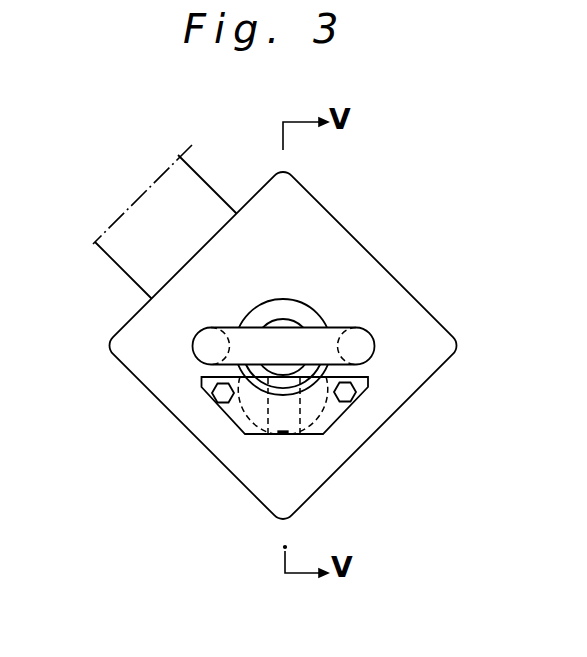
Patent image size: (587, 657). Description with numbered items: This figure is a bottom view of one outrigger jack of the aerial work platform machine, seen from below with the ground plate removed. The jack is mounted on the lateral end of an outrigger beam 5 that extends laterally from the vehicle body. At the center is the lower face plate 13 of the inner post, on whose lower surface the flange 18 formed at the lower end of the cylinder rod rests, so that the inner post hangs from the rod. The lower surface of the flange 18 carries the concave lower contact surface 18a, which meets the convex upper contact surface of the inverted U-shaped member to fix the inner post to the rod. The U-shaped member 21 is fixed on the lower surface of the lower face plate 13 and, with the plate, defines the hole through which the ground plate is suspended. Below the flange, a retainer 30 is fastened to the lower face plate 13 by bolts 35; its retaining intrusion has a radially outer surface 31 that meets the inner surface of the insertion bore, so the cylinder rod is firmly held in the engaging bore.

The outrigger beam 5 is at (213, 190).
The lower face plate 13 is at (345, 239).
The flange 18 is at (298, 308).
The lower contact surface 18a is at (280, 318).
The U-shaped member 21 is at (328, 327).
The retainer 30 is at (337, 418).
The radially outer surface 31 is at (279, 437).
The bolts 35 is at (214, 403).